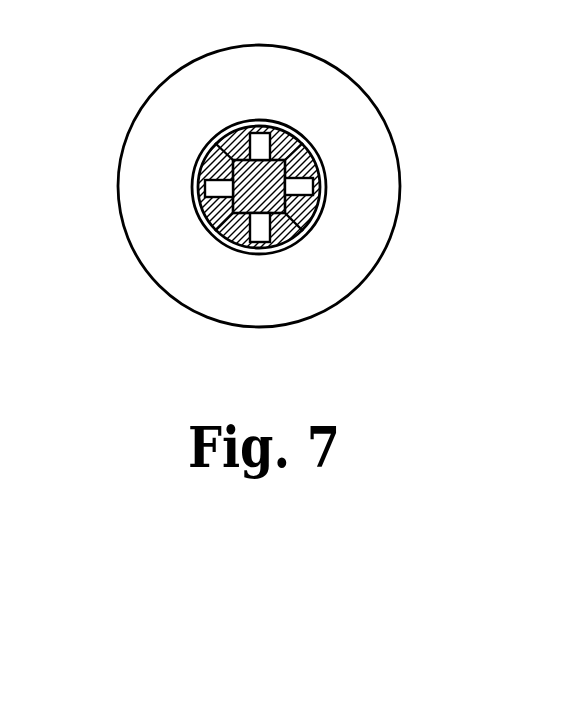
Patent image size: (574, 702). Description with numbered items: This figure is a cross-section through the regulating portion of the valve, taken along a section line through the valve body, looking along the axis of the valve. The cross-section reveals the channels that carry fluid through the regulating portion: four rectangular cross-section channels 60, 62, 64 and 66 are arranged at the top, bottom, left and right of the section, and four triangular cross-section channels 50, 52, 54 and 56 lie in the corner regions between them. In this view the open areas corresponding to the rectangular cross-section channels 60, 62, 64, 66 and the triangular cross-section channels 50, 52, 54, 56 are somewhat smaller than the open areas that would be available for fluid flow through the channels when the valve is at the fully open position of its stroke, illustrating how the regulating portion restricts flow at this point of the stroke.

The triangular cross-section channel 50 is at (283, 157).
The triangular cross-section channel 52 is at (298, 214).
The triangular cross-section channel 54 is at (217, 218).
The triangular cross-section channel 56 is at (231, 161).
The rectangular cross-section channel 60 is at (300, 182).
The rectangular cross-section channel 62 is at (262, 233).
The rectangular cross-section channel 64 is at (220, 186).
The rectangular cross-section channel 66 is at (259, 142).